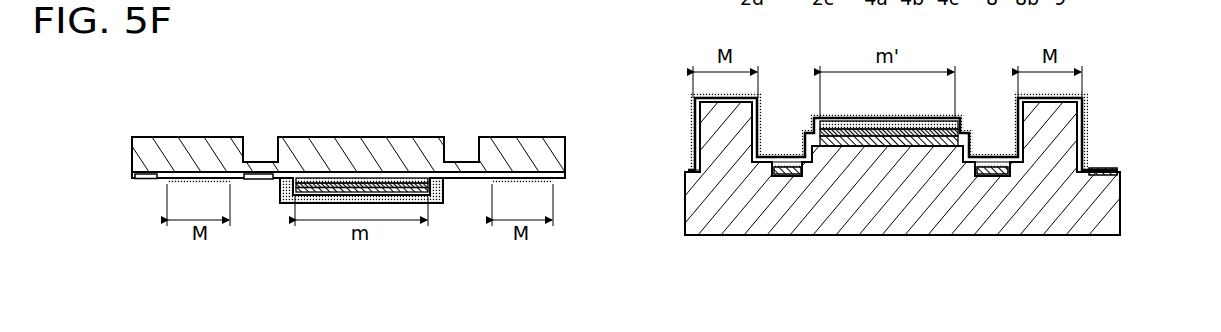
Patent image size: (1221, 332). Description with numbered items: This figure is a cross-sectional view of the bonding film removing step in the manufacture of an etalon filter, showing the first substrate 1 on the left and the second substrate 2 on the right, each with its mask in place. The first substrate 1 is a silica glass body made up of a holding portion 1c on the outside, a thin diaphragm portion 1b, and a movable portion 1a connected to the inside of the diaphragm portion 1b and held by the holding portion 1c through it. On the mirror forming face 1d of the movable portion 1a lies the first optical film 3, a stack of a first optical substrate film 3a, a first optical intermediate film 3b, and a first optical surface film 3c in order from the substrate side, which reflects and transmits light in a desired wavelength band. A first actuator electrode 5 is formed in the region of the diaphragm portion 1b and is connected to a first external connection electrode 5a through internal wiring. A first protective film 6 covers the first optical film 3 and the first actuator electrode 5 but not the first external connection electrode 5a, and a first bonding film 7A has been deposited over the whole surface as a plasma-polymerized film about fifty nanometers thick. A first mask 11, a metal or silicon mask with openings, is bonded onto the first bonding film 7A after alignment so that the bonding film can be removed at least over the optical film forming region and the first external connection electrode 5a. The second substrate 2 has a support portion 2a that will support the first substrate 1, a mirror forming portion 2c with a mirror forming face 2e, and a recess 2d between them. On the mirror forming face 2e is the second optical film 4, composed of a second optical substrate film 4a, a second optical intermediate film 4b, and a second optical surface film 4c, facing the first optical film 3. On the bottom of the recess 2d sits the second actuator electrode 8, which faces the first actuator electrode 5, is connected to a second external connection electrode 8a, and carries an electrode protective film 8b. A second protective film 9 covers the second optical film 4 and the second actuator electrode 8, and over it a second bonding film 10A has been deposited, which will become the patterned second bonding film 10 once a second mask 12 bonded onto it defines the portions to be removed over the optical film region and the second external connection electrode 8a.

The first substrate 1 is at (558, 148).
The movable portion 1a is at (343, 148).
The diaphragm portion 1b is at (262, 164).
The holding portion 1c is at (150, 152).
The mirror forming face 1d is at (303, 186).
The first optical film 3 is at (378, 119).
The first optical substrate film 3a is at (386, 179).
The first optical intermediate film 3b is at (404, 185).
The first optical surface film 3c is at (426, 190).
The first actuator electrode 5 is at (258, 181).
The first external connection electrode 5a is at (144, 186).
The first protective film 6 is at (284, 192).
The first bonding film 7A is at (563, 178).
The first mask 11 is at (183, 184).
The second substrate 2 is at (1110, 208).
The support portion 2a is at (1060, 150).
The mirror forming portion 2c is at (830, 165).
The recess 2d is at (768, 143).
The mirror forming face 2e is at (860, 132).
The second optical film 4 is at (889, 165).
The second optical substrate film 4a is at (895, 148).
The second optical intermediate film 4b is at (916, 140).
The second optical surface film 4c is at (935, 134).
The second actuator electrode 8 is at (990, 177).
The second external connection electrode 8a is at (1108, 166).
The electrode protective film 8b is at (1003, 172).
The second protective film 9 is at (1012, 162).
The second bonding film 10 is at (1084, 106).
The second bonding film 10A is at (690, 171).
The second mask 12 is at (1080, 94).